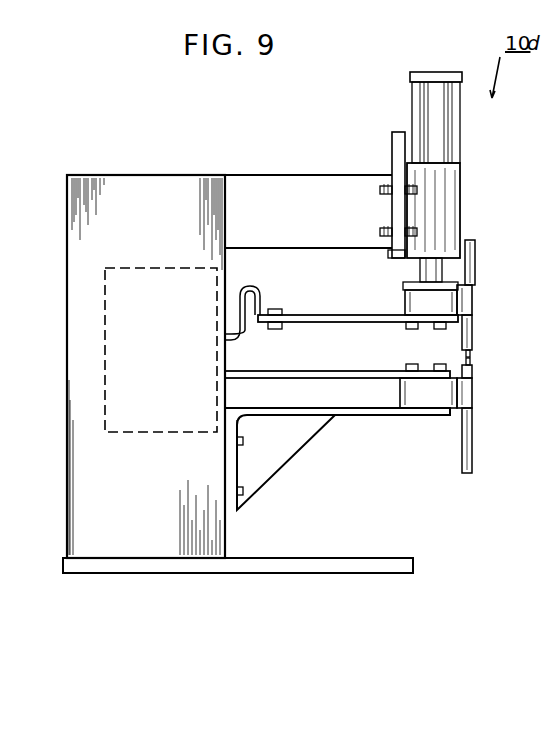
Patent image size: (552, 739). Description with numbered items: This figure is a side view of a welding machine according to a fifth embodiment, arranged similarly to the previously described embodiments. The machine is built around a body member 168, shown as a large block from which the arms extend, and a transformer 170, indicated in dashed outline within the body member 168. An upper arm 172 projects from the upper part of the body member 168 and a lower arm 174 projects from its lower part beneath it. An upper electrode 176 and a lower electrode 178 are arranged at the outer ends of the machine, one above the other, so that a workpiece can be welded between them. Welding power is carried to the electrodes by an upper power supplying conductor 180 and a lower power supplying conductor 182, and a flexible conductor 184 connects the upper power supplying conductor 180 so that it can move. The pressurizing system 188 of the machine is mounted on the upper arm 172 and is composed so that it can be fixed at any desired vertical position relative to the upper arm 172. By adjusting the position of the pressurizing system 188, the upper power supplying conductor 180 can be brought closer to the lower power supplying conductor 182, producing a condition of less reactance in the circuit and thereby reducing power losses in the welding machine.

The body member 168 is at (146, 190).
The transformer 170 is at (115, 345).
The upper arm 172 is at (318, 190).
The lower arm 174 is at (351, 416).
The upper electrode 176 is at (476, 248).
The lower electrode 178 is at (473, 435).
The upper power supplying conductor 180 is at (350, 315).
The lower power supplying conductor 182 is at (332, 372).
The flexible conductor 184 is at (255, 288).
The pressurizing system 188 is at (447, 133).